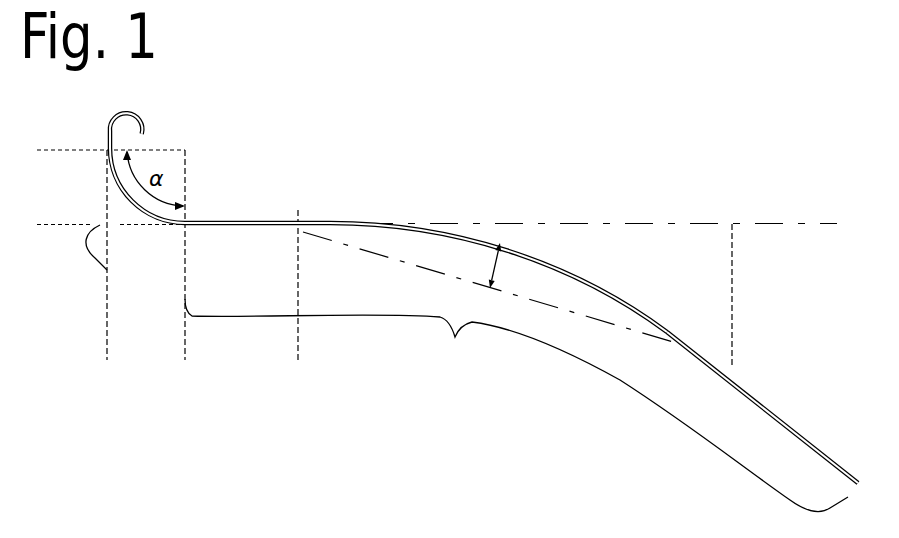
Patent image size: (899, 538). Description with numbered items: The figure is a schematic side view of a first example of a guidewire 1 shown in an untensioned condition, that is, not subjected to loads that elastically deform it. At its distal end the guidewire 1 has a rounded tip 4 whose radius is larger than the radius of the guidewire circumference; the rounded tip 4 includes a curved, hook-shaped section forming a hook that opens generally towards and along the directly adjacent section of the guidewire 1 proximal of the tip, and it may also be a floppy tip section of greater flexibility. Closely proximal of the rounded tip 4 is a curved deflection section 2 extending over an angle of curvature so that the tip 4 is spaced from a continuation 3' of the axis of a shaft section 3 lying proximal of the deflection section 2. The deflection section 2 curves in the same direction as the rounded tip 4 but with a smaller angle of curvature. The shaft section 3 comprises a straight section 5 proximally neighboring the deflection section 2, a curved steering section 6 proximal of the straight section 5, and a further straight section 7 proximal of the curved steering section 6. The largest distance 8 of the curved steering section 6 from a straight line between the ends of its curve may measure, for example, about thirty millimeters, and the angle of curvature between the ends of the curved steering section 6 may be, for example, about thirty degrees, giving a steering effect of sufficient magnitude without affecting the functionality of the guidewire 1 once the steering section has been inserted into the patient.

The guidewire 1 is at (444, 283).
The curved deflection section 2 is at (116, 182).
The shaft section 3 is at (516, 405).
The continuation of an axis of the shaft section 3' is at (86, 256).
The rounded tip 4 is at (139, 131).
The straight section 5 is at (239, 221).
The curved steering section 6 is at (488, 241).
The further straight section 7 is at (815, 441).
The largest distance 8 is at (504, 265).